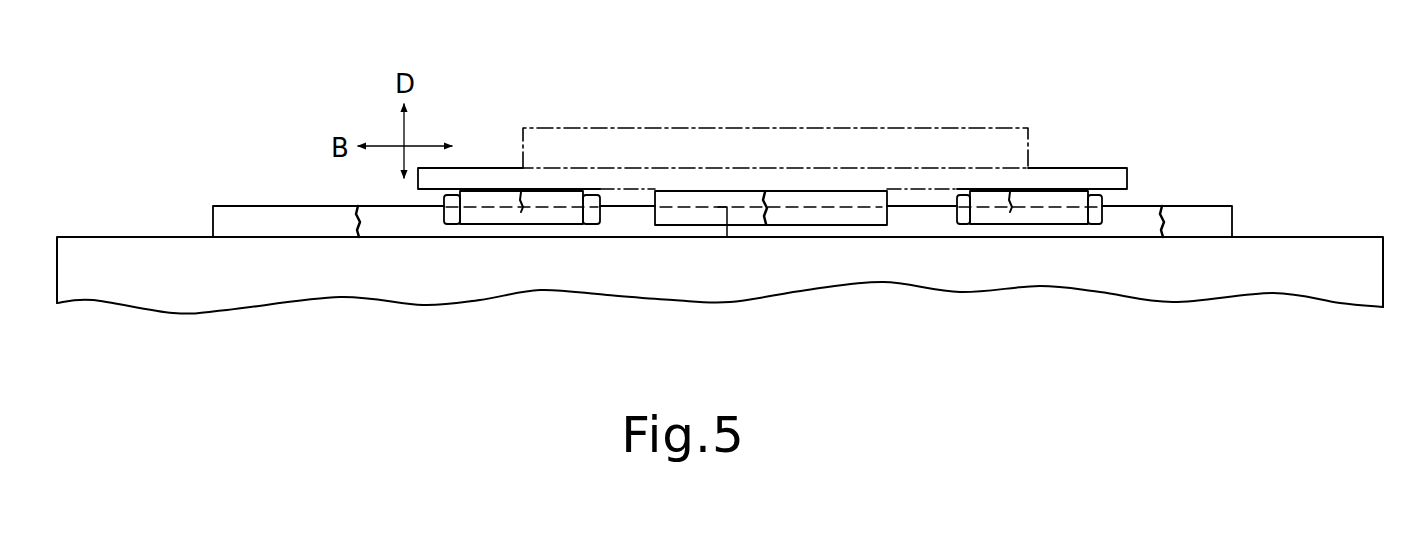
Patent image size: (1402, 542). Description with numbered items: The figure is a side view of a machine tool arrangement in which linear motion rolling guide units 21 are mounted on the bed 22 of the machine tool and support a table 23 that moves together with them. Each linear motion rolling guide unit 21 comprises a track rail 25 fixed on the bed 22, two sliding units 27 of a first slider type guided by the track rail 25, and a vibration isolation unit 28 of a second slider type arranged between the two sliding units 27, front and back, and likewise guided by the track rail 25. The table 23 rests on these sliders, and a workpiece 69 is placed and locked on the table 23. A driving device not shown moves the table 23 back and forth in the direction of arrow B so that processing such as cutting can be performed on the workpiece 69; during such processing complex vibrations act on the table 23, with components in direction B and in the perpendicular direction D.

The linear motion rolling guide unit 21 is at (1141, 197).
The bed 22 is at (156, 255).
The table 23 is at (1102, 180).
The track rail 25 is at (285, 203).
The sliding unit 27 is at (503, 187).
The vibration isolation unit 28 is at (790, 187).
The workpiece 69 is at (907, 142).